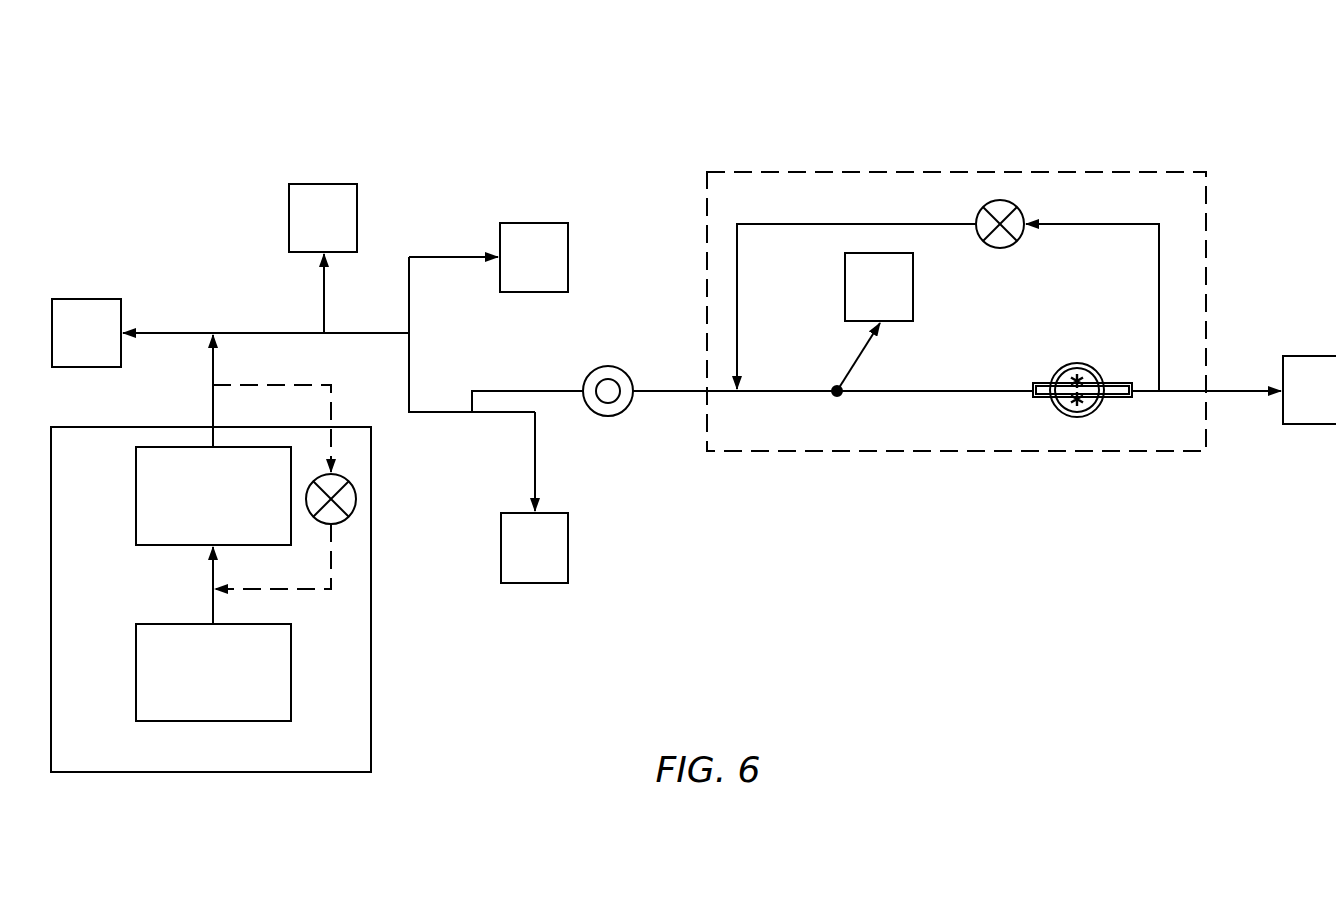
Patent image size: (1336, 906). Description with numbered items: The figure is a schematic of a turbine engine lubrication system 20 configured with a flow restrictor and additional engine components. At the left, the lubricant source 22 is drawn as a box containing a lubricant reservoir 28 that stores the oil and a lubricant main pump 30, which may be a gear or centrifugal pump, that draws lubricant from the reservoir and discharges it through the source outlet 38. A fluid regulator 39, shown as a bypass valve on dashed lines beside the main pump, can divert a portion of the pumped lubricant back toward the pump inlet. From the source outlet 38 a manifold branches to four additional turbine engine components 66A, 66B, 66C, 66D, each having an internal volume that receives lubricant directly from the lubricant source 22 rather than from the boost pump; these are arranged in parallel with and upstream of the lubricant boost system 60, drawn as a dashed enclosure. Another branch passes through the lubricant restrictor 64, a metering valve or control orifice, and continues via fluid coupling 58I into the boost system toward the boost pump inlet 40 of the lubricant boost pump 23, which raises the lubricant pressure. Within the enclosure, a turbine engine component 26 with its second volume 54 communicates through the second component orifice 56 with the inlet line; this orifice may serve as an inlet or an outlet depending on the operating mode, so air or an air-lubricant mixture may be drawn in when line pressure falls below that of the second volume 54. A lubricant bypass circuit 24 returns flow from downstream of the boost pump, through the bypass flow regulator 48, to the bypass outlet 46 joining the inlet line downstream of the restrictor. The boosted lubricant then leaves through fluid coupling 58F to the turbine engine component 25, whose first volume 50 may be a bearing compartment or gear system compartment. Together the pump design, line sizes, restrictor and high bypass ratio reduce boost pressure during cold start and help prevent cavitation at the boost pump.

The lubrication system 20 is at (1252, 96).
The lubricant source 22 is at (371, 724).
The lubricant boost pump 23 is at (1090, 364).
The lubricant bypass circuit 24 is at (1160, 285).
The turbine engine component 25 is at (1328, 354).
The turbine engine component 26 is at (927, 287).
The lubricant reservoir 28 is at (136, 668).
The lubricant main pump 30 is at (136, 500).
The source outlet 38 is at (213, 424).
The fluid regulator 39 is at (356, 499).
The boost pump inlet 40 is at (1054, 354).
The bypass outlet 46 is at (742, 388).
The bypass flow regulator 48 is at (1018, 207).
The first volume 50 is at (1301, 403).
The second volume 54 is at (862, 300).
The second component orifice 56 is at (883, 323).
The fluid coupling 58F is at (1240, 395).
The fluid coupling 58I is at (858, 360).
The lubricant boost system 60 is at (1210, 180).
The lubricant restrictor 64 is at (612, 416).
The additional turbine engine component 66A is at (89, 298).
The additional turbine engine component 66B is at (325, 184).
The additional turbine engine component 66C is at (535, 222).
The additional turbine engine component 66D is at (534, 583).